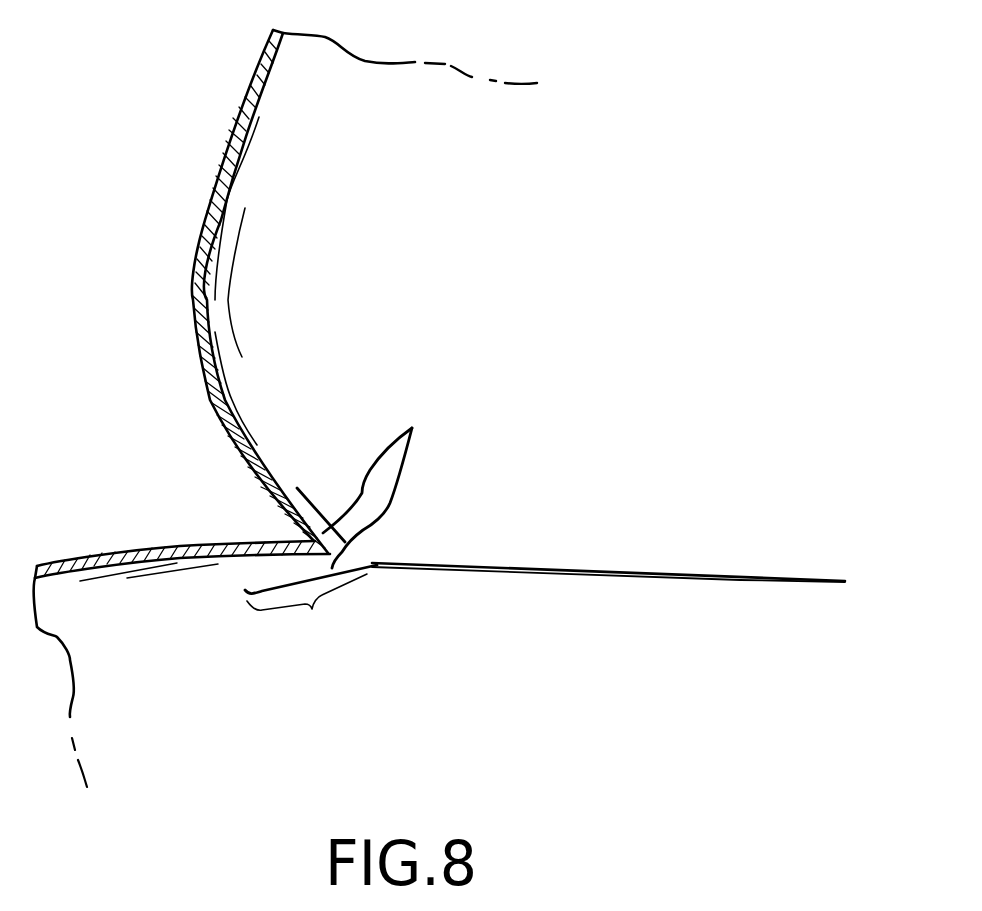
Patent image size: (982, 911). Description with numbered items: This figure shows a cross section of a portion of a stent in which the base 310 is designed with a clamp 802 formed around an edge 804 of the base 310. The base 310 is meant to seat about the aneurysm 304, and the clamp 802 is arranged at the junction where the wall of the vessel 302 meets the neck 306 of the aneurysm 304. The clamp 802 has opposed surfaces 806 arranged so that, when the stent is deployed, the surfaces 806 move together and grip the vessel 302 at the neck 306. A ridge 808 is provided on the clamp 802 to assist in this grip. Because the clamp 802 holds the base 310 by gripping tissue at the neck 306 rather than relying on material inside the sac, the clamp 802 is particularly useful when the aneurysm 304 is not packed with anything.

The vessel 302 is at (90, 555).
The aneurysm 304 is at (223, 127).
The neck 306 is at (287, 535).
The base 310 is at (660, 578).
The clamp 802 is at (311, 606).
The edge 804 is at (342, 552).
The opposed surfaces 806 is at (394, 483).
The ridge 808 is at (297, 486).